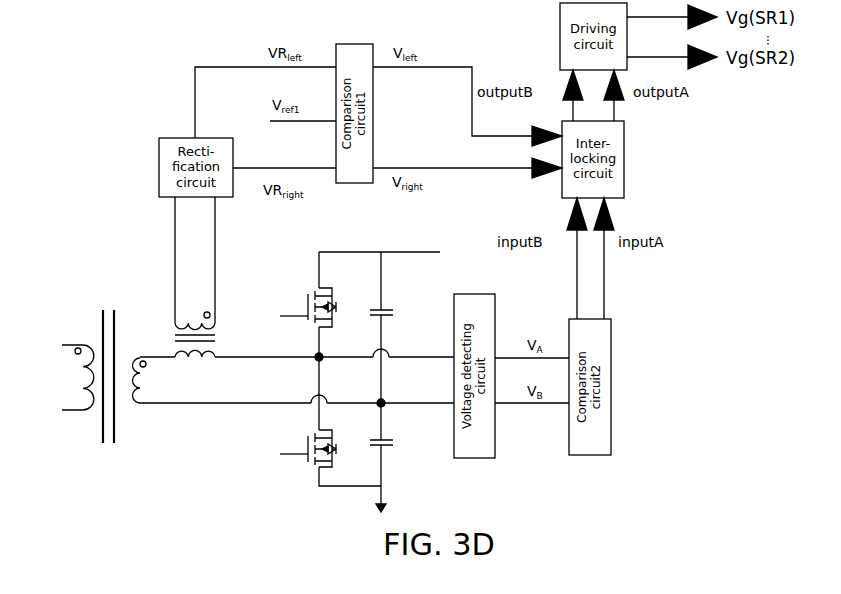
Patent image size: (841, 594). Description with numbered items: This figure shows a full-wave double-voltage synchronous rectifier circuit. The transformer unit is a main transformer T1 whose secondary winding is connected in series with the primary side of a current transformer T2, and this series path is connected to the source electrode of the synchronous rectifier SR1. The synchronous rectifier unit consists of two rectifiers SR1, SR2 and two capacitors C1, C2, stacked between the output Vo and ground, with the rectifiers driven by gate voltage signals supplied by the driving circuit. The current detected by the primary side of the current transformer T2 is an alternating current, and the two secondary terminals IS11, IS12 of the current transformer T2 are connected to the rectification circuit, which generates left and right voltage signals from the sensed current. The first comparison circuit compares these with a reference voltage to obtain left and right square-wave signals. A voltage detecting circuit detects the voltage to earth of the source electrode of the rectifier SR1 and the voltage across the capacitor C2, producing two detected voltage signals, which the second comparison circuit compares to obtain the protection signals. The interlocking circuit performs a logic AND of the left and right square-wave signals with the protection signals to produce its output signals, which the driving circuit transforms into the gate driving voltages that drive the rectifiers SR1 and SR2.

The synchronous rectifier SR1 is at (298, 303).
The synchronous rectifier SR2 is at (298, 448).
The capacitor C1 is at (396, 316).
The capacitor C2 is at (396, 446).
The transformer T1 is at (101, 395).
The current transformer T2 is at (213, 351).
The secondary IS11 terminal IS11 is at (270, 324).
The secondary IS12 terminal IS12 is at (137, 325).
The output voltage Vo is at (406, 327).